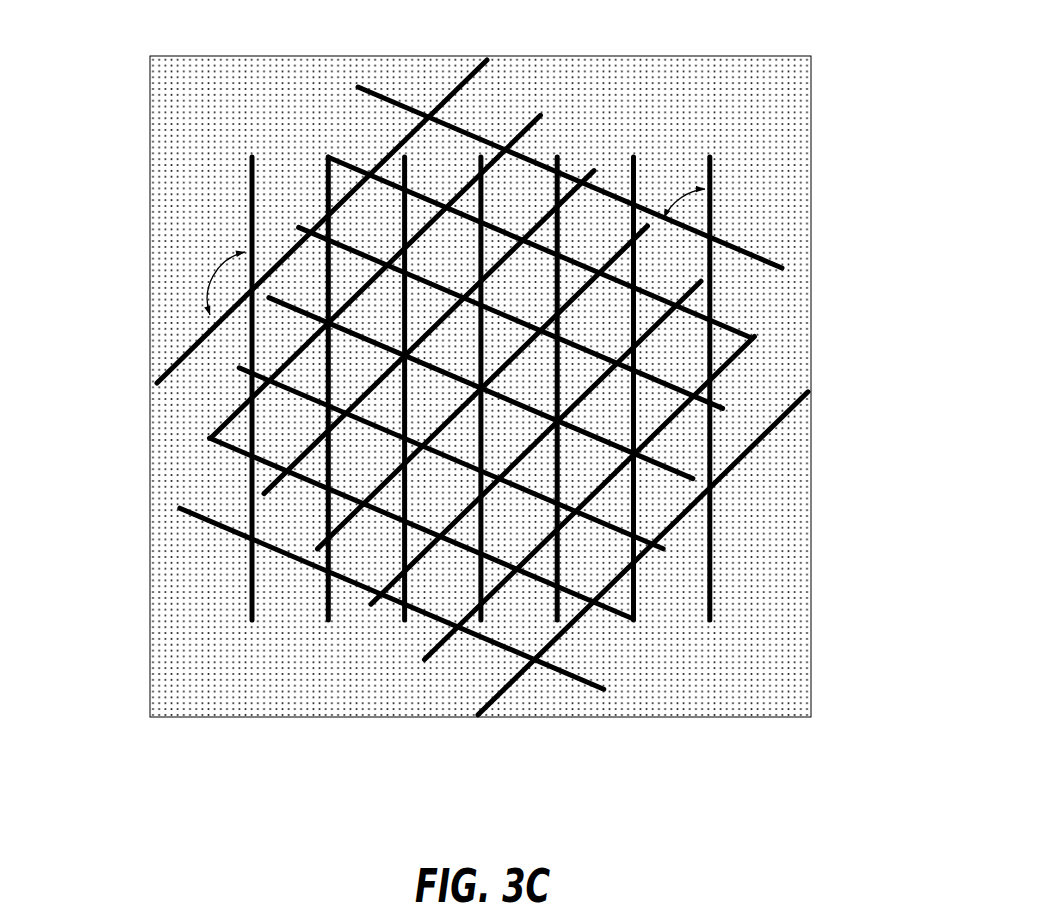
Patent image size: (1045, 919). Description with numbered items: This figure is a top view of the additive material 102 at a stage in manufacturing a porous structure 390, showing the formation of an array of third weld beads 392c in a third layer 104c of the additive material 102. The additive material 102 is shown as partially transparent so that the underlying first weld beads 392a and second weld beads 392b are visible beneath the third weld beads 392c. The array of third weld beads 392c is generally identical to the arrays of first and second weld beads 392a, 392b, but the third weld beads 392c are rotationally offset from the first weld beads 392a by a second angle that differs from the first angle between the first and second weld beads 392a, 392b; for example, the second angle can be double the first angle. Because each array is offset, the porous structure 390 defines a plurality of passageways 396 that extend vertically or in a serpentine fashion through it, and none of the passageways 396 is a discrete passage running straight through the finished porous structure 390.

The additive material 102 is at (489, 408).
The third layer 104c is at (803, 184).
The porous structure 390 is at (514, 408).
The first weld beads 392a is at (254, 185).
The second weld beads 392b is at (598, 609).
The third weld beads 392c is at (720, 327).
The passageways 396 is at (352, 465).